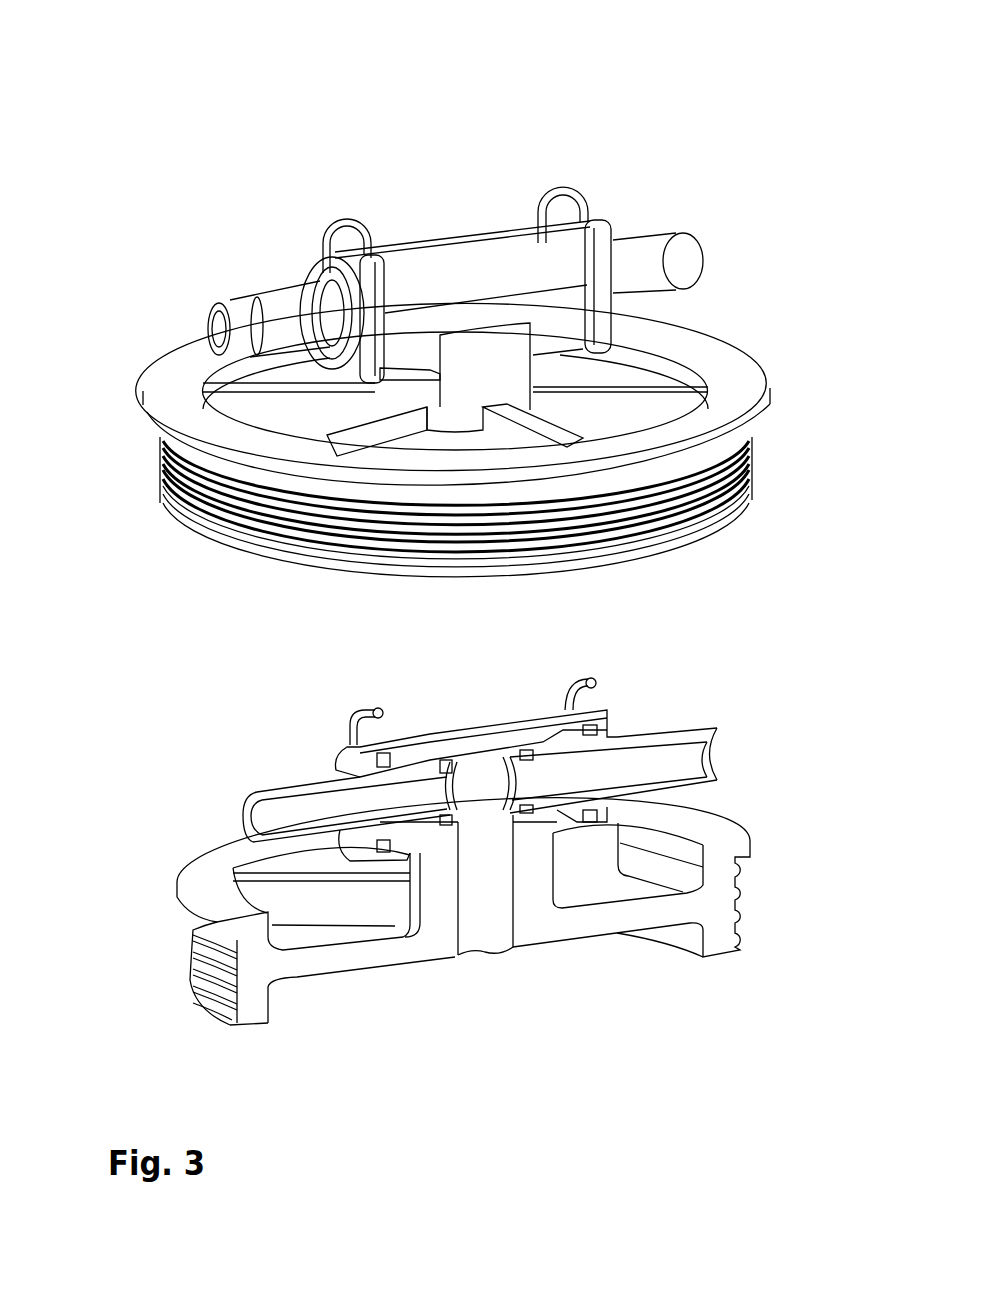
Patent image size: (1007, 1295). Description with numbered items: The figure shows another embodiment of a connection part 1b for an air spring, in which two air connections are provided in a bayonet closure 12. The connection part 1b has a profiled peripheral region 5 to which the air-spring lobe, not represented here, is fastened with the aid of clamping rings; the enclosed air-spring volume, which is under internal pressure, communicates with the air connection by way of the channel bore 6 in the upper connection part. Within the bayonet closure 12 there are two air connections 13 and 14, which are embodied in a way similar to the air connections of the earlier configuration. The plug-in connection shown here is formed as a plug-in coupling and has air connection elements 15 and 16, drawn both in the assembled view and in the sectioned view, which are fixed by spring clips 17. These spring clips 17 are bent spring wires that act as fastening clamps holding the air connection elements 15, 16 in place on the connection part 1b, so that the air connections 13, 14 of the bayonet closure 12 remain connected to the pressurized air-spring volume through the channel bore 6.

The connection part 1b is at (457, 194).
The profiled peripheral region 5 is at (137, 445).
The channel bore 6 is at (483, 915).
The bayonet closure 12 is at (553, 325).
The air connection 13 is at (199, 277).
The air connection 14 is at (722, 240).
The air connection element 15 is at (328, 808).
The air connection element 16 is at (568, 773).
The spring clip 17 is at (318, 217).